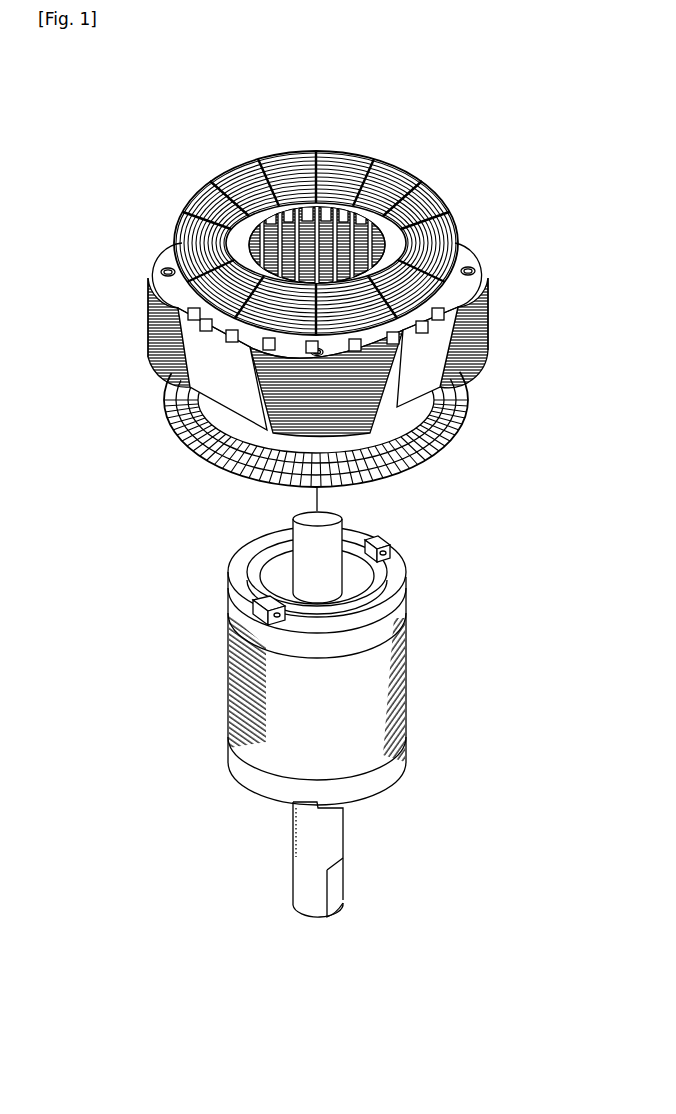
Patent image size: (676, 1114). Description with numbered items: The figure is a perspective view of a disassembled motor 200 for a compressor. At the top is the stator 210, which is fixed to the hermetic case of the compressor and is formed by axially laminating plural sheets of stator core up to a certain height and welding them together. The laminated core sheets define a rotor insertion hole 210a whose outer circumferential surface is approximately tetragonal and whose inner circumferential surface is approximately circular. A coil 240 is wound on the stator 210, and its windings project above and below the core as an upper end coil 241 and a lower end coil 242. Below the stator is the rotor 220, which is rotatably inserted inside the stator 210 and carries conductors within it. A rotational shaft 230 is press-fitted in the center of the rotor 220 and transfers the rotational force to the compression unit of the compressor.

The motor 200 is at (116, 422).
The stator 210 is at (477, 237).
The rotor insertion hole 210a is at (280, 155).
The rotor 220 is at (416, 659).
The rotational shaft 230 is at (353, 844).
The coil 240 is at (431, 164).
The upper end coil 241 is at (348, 150).
The lower end coil 242 is at (465, 418).